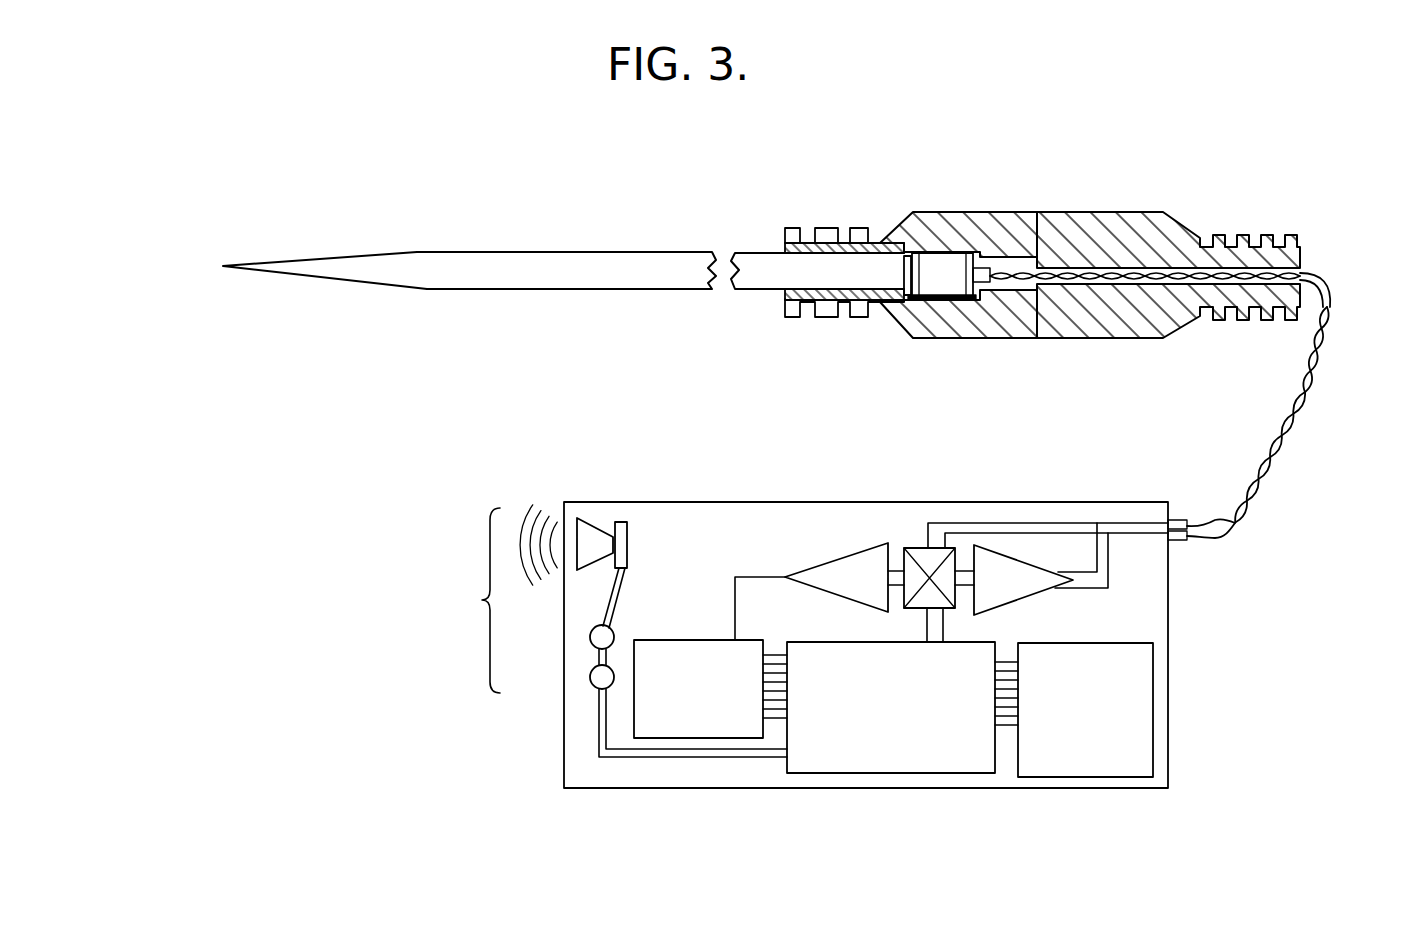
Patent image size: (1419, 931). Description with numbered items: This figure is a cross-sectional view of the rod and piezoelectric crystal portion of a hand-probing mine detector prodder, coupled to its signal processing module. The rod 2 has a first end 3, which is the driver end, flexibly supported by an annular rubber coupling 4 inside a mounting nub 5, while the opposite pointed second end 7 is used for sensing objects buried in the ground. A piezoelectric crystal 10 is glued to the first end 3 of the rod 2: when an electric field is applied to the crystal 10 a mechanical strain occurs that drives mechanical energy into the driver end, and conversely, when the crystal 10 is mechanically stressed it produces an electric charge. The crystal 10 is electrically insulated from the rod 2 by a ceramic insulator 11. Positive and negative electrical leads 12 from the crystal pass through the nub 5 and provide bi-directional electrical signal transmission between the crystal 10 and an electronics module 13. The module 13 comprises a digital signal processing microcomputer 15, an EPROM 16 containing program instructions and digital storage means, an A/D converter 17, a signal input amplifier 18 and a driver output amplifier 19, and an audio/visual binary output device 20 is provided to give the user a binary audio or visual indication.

The pointed second end 7 is at (334, 260).
The rod 2 is at (655, 262).
The first end 3 is at (778, 270).
The annular rubber coupling 4 is at (788, 297).
The mounting nub 5 is at (1120, 222).
The piezoelectric crystal 10 is at (954, 258).
The ceramic insulator 11 is at (906, 262).
The electrical leads 12 is at (1302, 412).
The electronics module 13 is at (733, 503).
The digital signal processing microcomputer 15 is at (915, 773).
The EPROM 16 is at (1108, 777).
The A/D converter 17 is at (703, 737).
The signal input amplifier 18 is at (858, 560).
The driver output amplifier 19 is at (1015, 565).
The audio/visual binary output device 20 is at (536, 599).